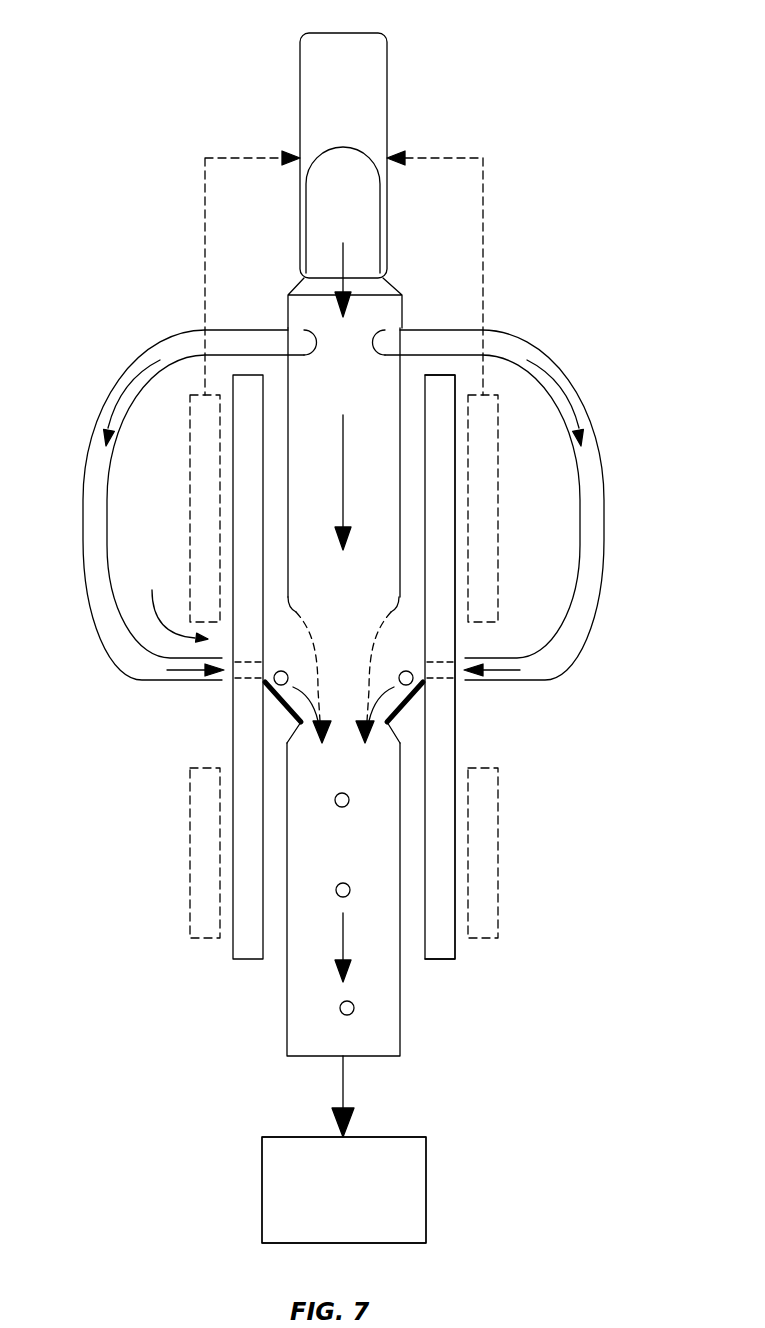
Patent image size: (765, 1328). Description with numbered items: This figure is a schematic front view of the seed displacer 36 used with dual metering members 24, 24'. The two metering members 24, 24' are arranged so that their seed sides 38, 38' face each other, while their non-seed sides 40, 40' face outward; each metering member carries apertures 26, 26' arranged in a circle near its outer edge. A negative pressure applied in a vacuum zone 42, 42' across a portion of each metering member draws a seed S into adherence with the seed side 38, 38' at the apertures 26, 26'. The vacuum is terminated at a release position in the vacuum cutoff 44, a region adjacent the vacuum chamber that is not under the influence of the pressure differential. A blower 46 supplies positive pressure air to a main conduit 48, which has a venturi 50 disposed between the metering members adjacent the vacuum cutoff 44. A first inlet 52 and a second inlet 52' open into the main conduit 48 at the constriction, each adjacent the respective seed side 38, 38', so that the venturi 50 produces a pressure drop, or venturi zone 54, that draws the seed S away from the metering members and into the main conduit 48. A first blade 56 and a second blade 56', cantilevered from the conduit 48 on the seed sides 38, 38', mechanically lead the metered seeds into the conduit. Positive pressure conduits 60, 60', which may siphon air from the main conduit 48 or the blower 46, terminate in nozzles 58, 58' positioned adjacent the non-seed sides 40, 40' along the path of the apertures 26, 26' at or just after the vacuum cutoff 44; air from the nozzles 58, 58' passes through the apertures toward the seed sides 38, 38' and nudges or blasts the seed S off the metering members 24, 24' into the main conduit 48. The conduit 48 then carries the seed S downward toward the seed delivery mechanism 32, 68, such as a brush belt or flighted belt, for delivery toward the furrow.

The metering member 24 is at (295, 732).
The second metering member 24' is at (466, 698).
The apertures 26 is at (193, 800).
The apertures of second metering member 26' is at (501, 800).
The seed delivery mechanism 32 is at (395, 1137).
The seed displacer 36 is at (148, 170).
The seed side 38 is at (213, 334).
The seed side of second metering member 38' is at (480, 334).
The non-seed side 40 is at (209, 684).
The non-seed side of second metering member 40' is at (485, 684).
The vacuum zone 42 is at (180, 508).
The vacuum zone of second metering member 42' is at (511, 508).
The vacuum cutoff 44 is at (171, 604).
The blower 46 is at (333, 31).
The main conduit 48 is at (403, 313).
The venturi 50 is at (343, 637).
The inlet 52 is at (234, 624).
The second inlet 52' is at (461, 639).
The venturi zone 54 is at (360, 663).
The blade 56 is at (221, 750).
The second blade 56' is at (472, 750).
The nozzle 58 is at (176, 697).
The second positive pressure nozzle 58' is at (517, 697).
The positive pressure conduit 60 is at (173, 505).
The second positive pressure conduit 60' is at (523, 505).
The downstream component 68 is at (344, 1190).
The seed S is at (340, 808).